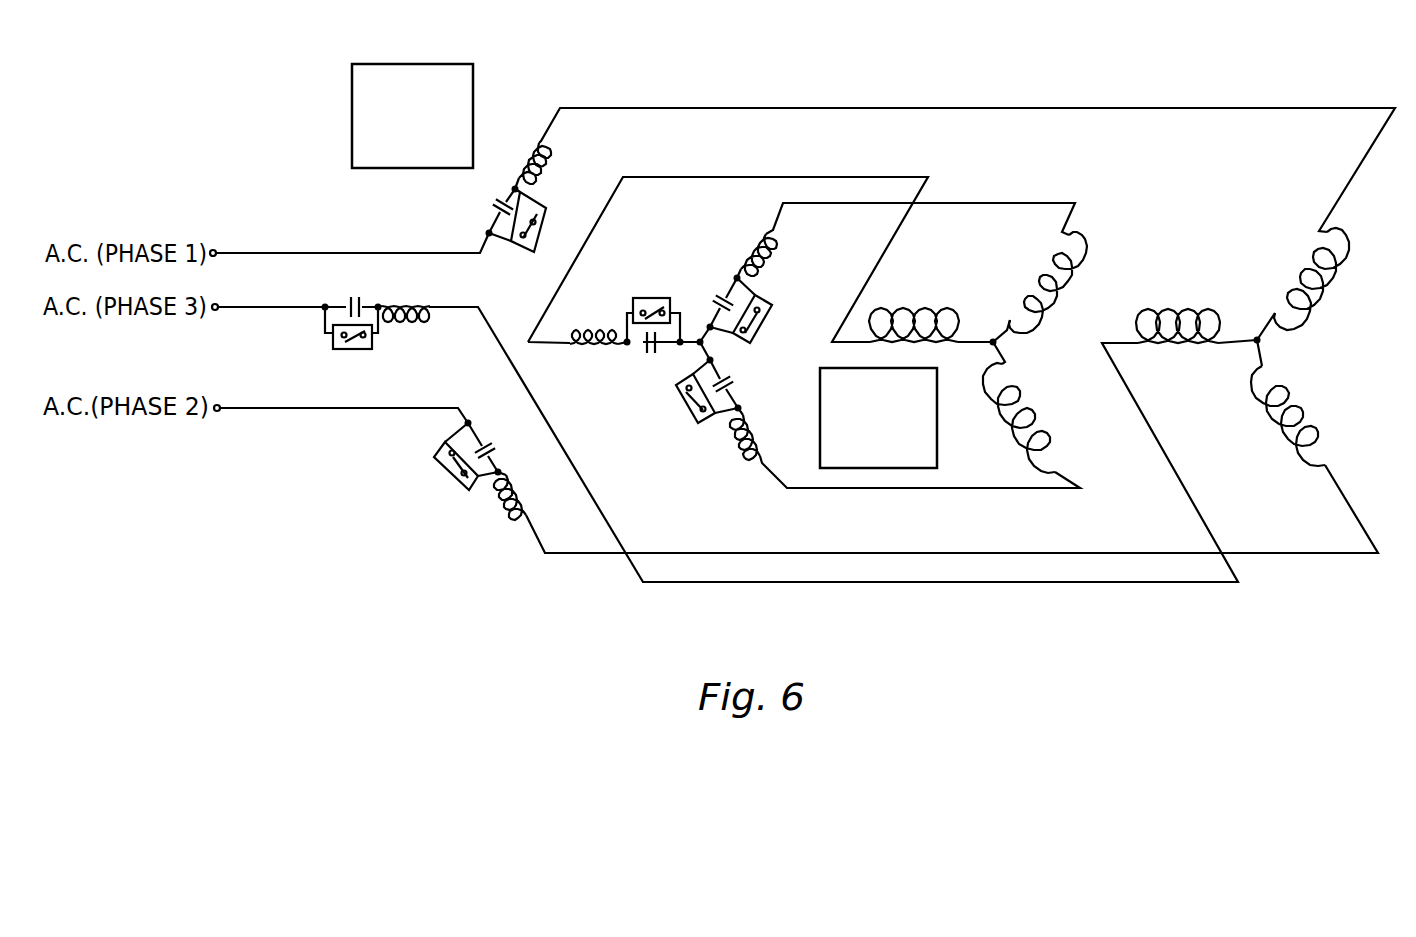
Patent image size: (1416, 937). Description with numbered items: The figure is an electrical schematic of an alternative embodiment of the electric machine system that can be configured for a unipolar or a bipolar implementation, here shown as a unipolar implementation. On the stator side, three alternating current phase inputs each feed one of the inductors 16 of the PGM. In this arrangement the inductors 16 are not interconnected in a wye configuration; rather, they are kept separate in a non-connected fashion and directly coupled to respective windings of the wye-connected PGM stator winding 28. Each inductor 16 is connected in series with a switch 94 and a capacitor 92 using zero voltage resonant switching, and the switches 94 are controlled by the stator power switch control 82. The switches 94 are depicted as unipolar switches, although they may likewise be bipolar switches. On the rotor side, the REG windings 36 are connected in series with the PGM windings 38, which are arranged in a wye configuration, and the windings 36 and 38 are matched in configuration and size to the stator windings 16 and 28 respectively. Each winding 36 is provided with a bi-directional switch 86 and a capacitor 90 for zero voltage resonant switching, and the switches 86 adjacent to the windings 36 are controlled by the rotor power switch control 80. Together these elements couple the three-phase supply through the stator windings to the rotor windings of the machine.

The stator phase windings 16 is at (543, 167).
The stator phase windings 28 is at (1295, 327).
The rotor windings 36 is at (757, 247).
The rotor windings 38 is at (1032, 412).
The rotor power switch control 80 is at (937, 452).
The stator power switch control 82 is at (406, 168).
The bi-directional switches 86 is at (676, 284).
The capacitors 90 is at (646, 353).
The capacitors 92 is at (498, 210).
The switches 94 is at (548, 236).